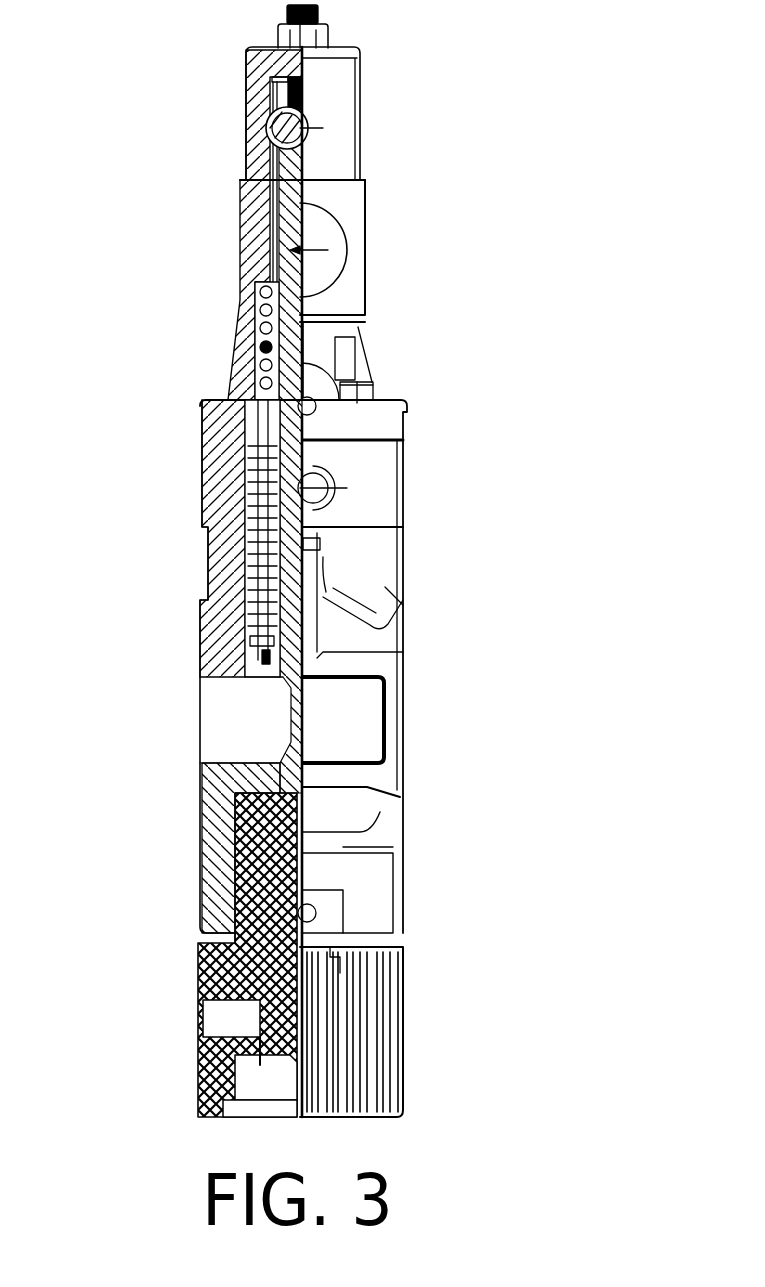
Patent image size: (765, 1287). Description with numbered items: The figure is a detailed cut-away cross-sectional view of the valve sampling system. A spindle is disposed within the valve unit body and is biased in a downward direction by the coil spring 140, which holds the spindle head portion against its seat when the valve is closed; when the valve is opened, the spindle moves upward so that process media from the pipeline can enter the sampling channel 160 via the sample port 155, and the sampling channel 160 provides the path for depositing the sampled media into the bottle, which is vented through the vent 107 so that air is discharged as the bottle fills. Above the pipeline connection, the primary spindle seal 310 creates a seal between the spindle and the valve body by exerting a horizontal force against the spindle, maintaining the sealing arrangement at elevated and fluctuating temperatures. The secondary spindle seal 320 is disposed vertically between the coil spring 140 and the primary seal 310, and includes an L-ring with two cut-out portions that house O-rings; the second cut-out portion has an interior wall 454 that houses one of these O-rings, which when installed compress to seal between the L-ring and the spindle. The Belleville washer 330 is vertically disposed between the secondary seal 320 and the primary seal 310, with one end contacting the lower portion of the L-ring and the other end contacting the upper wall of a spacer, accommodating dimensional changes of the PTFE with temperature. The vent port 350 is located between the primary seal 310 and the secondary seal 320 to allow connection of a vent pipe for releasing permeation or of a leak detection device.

The coil spring 140 is at (243, 312).
The interior wall 454 is at (307, 207).
The secondary spindle seal 320 is at (205, 432).
The Belleville washer 330 is at (205, 472).
The primary spindle seal 310 is at (255, 575).
The vent port 350 is at (345, 472).
The sample port 155 is at (213, 878).
The vent 107 is at (230, 1020).
The sampling channel 160 is at (400, 943).